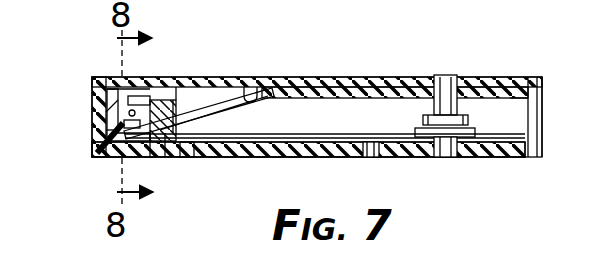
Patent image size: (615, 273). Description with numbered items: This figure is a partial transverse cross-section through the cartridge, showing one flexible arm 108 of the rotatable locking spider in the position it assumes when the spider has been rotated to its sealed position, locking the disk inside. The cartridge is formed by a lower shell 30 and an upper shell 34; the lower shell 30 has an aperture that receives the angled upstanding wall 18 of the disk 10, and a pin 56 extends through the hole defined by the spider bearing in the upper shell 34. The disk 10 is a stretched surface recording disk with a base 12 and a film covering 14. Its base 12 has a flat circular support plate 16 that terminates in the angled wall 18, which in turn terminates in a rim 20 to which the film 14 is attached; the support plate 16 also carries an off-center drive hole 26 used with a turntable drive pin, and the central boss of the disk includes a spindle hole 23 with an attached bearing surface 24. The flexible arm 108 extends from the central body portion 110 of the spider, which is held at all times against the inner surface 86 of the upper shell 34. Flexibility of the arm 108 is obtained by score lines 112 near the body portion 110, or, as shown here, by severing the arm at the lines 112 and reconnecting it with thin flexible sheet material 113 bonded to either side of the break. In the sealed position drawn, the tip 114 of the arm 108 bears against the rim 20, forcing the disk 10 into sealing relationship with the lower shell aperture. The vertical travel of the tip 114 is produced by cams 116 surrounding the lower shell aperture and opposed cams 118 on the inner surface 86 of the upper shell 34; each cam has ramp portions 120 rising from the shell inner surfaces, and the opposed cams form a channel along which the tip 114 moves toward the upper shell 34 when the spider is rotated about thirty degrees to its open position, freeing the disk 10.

The stretched surface recording disk 10 is at (317, 117).
The base 12 is at (275, 158).
The film covering 14 is at (392, 133).
The support plate 16 is at (319, 158).
The angled upstanding wall 18 is at (188, 158).
The rim 20 is at (118, 158).
The spindle hole 23 is at (440, 158).
The bearing surface 24 is at (449, 158).
The drive hole 26 is at (368, 159).
The lower shell 30 is at (97, 162).
The upper shell 34 is at (515, 74).
The pin 56 is at (445, 75).
The inner surface of the upper shell 86 is at (224, 100).
The flexible arm 108 is at (157, 162).
The central body portion 110 is at (518, 101).
The score lines 112 is at (279, 85).
The flexible sheet material 113 is at (292, 99).
The tips of the arms 114 is at (100, 140).
The cams 116 is at (171, 100).
The opposed cams 118 is at (140, 97).
The ramp portions 120 is at (140, 124).